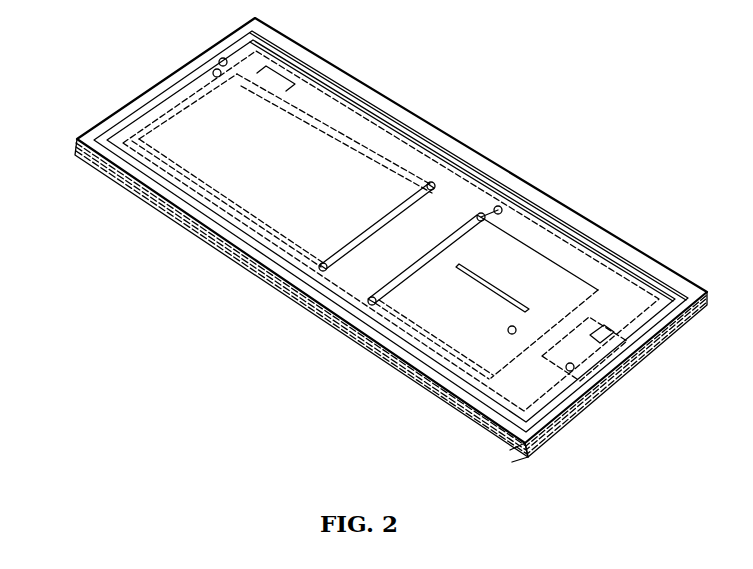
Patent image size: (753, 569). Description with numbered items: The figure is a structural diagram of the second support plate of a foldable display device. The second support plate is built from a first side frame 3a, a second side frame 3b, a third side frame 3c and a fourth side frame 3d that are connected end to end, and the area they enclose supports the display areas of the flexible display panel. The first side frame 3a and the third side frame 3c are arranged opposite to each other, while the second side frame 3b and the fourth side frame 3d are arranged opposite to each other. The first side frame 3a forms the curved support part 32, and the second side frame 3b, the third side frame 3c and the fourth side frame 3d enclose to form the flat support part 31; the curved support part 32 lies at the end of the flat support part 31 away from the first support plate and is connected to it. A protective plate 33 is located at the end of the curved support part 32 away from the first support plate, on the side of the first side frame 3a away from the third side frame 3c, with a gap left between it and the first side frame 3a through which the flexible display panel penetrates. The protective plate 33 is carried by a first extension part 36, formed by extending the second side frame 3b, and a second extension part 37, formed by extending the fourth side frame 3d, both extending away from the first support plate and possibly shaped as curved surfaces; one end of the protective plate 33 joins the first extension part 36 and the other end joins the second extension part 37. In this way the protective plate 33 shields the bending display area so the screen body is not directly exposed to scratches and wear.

The first extension part 36 is at (72, 139).
The protective plate 33 is at (158, 206).
The first side frame 3a is at (258, 238).
The curved support part 32 is at (313, 296).
The second side frame 3b is at (190, 70).
The flat support part 31 is at (197, 133).
The third side frame 3c is at (429, 128).
The fourth side frame 3d is at (624, 357).
The second extension part 37 is at (524, 446).